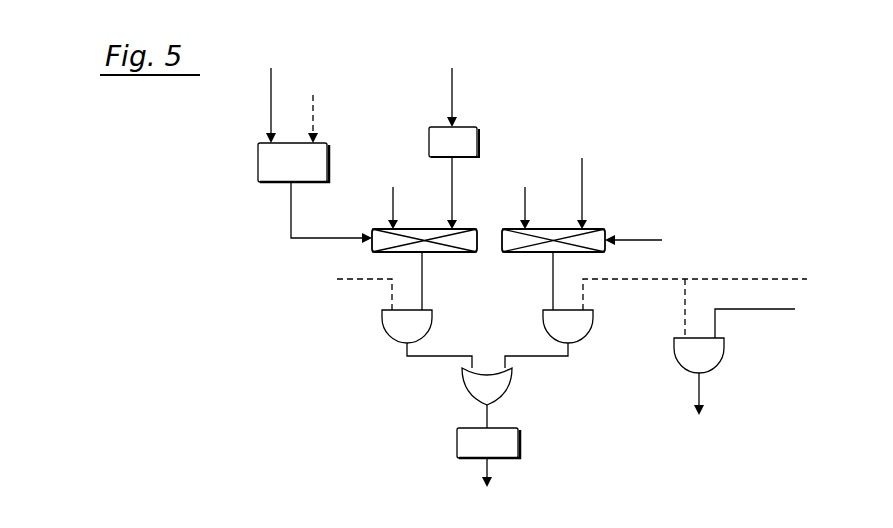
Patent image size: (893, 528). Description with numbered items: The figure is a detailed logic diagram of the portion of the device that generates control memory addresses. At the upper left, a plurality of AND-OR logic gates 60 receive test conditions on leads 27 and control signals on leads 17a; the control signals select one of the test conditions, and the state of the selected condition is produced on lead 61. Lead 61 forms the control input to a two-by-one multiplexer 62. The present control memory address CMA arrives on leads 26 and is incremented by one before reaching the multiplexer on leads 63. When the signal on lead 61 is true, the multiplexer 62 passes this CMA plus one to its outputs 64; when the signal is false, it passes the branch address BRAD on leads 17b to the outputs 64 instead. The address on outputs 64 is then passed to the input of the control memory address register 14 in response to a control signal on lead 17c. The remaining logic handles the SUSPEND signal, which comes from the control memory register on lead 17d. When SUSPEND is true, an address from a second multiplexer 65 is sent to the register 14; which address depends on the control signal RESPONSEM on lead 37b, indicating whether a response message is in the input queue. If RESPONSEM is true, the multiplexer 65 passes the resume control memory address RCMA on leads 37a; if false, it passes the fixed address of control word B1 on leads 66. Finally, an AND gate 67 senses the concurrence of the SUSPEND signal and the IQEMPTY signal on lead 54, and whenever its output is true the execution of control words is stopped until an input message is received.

The leads 27 is at (271, 110).
The leads 17a is at (313, 122).
The AND-OR logic gates 60 is at (258, 160).
The lead 61 is at (291, 222).
The leads 17b is at (393, 216).
The CMA input line 26 is at (452, 105).
The leads 63 is at (452, 215).
The 2×1 multiplexer 62 is at (470, 229).
The outputs 64 is at (422, 292).
The lead 17c is at (365, 280).
The leads 66 is at (525, 215).
The leads 37a is at (582, 203).
The lead 37b is at (628, 240).
The multiplexer 65 is at (520, 252).
The lead 17d is at (740, 279).
The lead 54 is at (740, 309).
The AND gate 67 is at (680, 362).
The control memory address register 14 is at (457, 445).